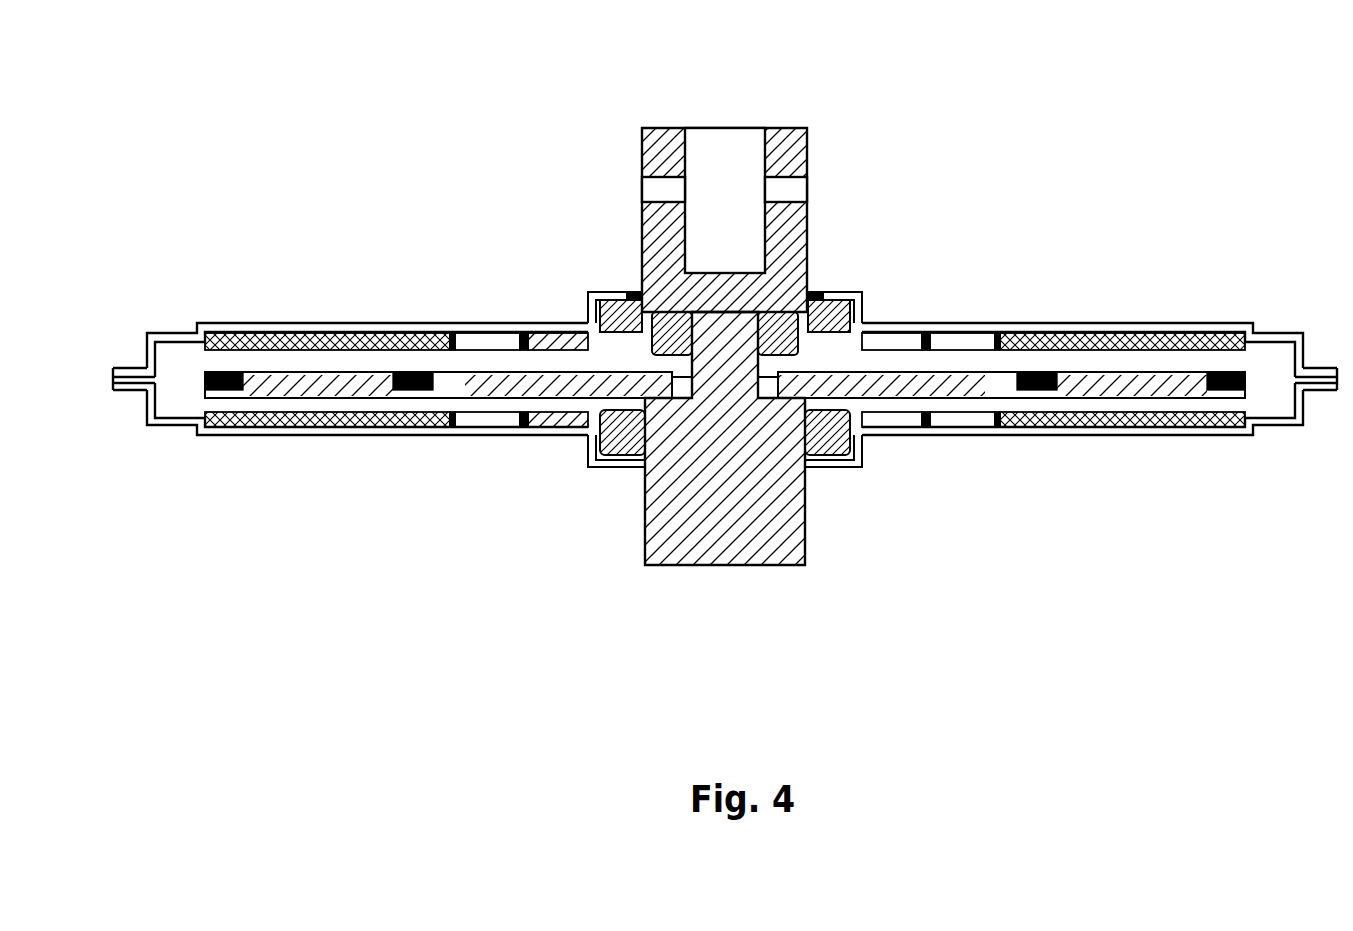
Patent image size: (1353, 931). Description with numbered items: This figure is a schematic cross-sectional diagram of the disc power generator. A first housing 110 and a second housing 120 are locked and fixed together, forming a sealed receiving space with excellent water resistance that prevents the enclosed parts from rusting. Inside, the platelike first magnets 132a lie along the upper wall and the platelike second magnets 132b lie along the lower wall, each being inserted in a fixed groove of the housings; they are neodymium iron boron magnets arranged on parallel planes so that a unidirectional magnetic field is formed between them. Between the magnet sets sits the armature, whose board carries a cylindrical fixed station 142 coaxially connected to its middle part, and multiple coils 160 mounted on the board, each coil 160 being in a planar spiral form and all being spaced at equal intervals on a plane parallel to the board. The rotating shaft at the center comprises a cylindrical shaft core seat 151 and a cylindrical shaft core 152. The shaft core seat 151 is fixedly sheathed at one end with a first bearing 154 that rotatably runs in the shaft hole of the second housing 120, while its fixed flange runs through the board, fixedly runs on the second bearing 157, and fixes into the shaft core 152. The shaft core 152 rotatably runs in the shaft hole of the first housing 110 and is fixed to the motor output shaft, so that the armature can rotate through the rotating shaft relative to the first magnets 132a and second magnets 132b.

The first housing 110 is at (172, 332).
The second housing 120 is at (170, 427).
The first magnets 132a is at (263, 330).
The second magnets 132b is at (230, 413).
The cylindrical fixed station 142 is at (562, 386).
The coils 160 is at (241, 393).
The shaft core seat 151 is at (662, 548).
The shaft core 152 is at (660, 228).
The second bearing 157 is at (815, 296).
The first bearing 154 is at (860, 467).